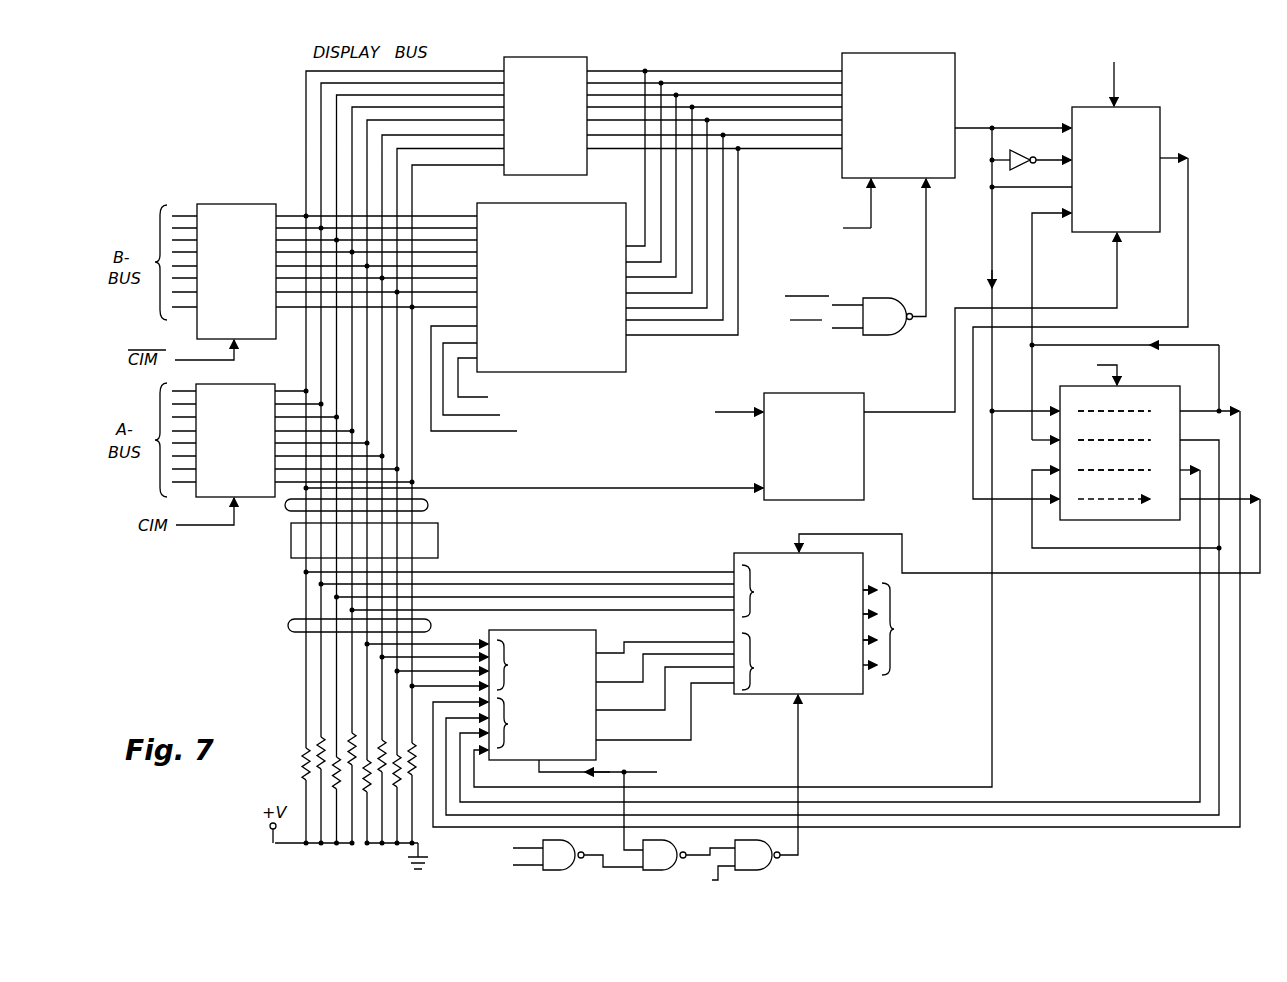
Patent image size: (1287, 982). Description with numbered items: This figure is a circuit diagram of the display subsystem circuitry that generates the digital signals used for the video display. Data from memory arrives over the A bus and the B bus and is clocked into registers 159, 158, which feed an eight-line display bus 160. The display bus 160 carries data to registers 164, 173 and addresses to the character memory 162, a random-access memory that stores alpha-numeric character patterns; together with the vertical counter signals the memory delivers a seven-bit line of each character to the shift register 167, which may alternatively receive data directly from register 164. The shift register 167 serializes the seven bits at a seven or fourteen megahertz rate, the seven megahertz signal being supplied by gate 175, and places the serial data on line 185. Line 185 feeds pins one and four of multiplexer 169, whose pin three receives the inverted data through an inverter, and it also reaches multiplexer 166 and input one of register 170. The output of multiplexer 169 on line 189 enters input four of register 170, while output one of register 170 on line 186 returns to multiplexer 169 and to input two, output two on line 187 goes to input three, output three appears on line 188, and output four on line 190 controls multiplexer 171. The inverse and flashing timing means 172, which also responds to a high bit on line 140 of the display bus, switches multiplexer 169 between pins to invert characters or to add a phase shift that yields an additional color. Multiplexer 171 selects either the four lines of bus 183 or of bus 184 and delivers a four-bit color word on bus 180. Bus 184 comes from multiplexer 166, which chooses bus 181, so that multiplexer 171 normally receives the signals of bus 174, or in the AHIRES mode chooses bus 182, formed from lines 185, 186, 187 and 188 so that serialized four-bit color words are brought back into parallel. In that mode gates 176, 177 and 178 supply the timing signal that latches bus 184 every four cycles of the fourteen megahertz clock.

The line of the display bus 140 is at (650, 488).
The register 158 is at (324, 271).
The register 159 is at (293, 440).
The display bus 160 is at (428, 505).
The character memory 162 is at (584, 257).
The register 164 is at (673, 116).
The multiplexer 166 is at (602, 706).
The shift register 167 is at (876, 145).
The multiplexer 169 is at (1076, 137).
The register 170 is at (1116, 438).
The multiplexer 171 is at (798, 623).
The inverse and flashing timing means 172 is at (847, 491).
The register 173 is at (438, 541).
The bus 174 is at (290, 632).
The gate 175 is at (877, 298).
The gate 176 is at (555, 840).
The gate 177 is at (664, 848).
The gate 178 is at (768, 862).
The bus 180 is at (892, 629).
The bus 181 is at (506, 668).
The bus 182 is at (506, 728).
The bus 183 is at (752, 592).
The bus 184 is at (764, 660).
The line 185 is at (1030, 127).
The line 186 is at (1046, 215).
The line 187 is at (1104, 534).
The line 188 is at (1048, 800).
The line 189 is at (1188, 168).
The line 190 is at (1150, 573).